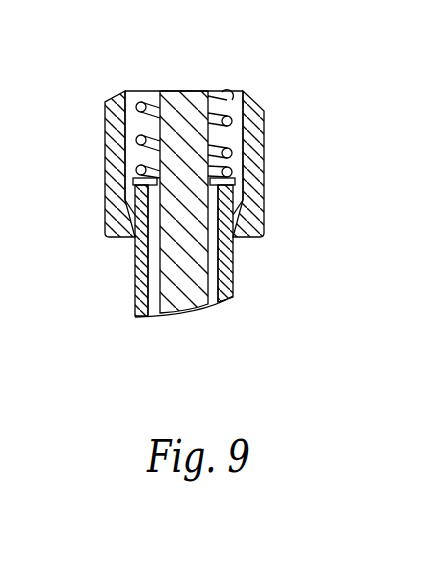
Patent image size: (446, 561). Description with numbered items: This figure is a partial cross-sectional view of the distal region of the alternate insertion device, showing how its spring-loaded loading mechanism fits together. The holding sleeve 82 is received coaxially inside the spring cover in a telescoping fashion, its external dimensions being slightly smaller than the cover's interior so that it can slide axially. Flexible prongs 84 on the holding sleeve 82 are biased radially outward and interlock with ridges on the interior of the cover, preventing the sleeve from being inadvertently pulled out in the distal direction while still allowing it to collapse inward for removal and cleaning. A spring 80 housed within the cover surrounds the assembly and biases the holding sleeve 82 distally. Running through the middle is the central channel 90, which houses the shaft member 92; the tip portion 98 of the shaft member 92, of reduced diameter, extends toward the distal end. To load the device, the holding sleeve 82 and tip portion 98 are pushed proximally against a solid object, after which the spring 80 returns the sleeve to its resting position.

The spring 80 is at (142, 103).
The holding sleeve 82 is at (232, 290).
The prongs 84 is at (107, 187).
The central channel 90 is at (237, 92).
The shaft member 92 is at (192, 110).
The tip portion 98 is at (264, 118).